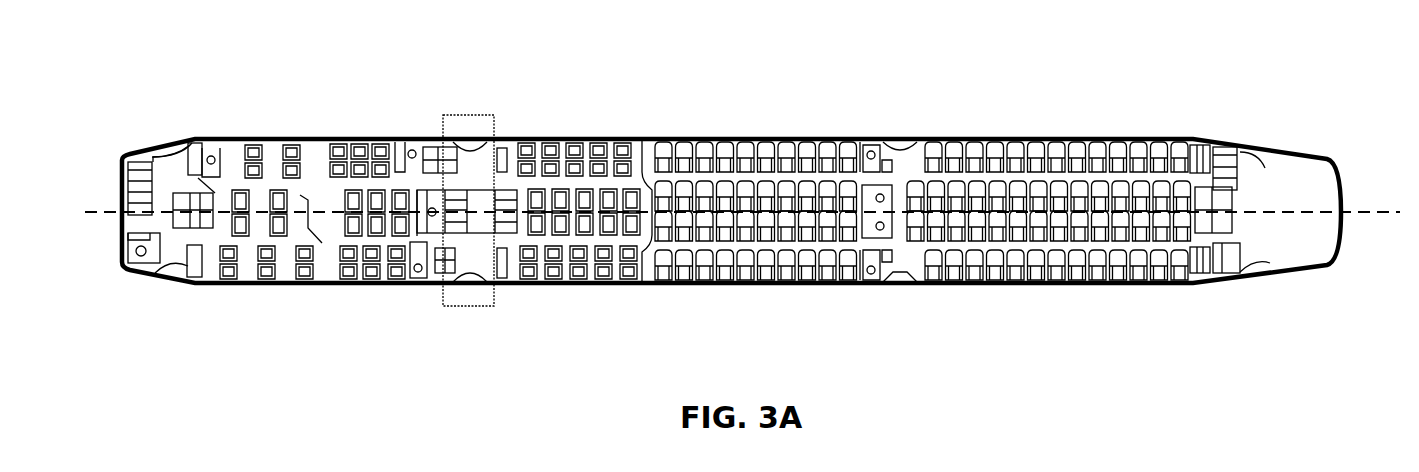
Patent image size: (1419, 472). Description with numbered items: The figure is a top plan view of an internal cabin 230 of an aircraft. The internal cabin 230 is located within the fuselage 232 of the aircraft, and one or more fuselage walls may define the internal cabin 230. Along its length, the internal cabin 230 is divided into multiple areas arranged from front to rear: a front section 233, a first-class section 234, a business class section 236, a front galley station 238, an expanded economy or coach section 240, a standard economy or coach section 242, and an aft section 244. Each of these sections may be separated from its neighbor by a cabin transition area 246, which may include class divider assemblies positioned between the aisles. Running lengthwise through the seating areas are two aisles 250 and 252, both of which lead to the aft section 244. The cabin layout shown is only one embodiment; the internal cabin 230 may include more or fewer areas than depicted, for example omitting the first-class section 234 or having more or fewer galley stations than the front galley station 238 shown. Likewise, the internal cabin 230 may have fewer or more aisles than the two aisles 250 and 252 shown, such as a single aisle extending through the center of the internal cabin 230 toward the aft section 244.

The internal cabin 230 is at (262, 47).
The fuselage 232 is at (593, 106).
The front section 233 is at (184, 292).
The first-class section 234 is at (275, 284).
The business class section 236 is at (349, 139).
The front galley station 238 is at (468, 307).
The expanded economy or coach section 240 is at (552, 284).
The standard economy or coach section 242 is at (697, 137).
The aft section 244 is at (1262, 167).
The cabin transition area 246 is at (197, 138).
The aisle 250 is at (1058, 178).
The aisle 252 is at (1075, 248).